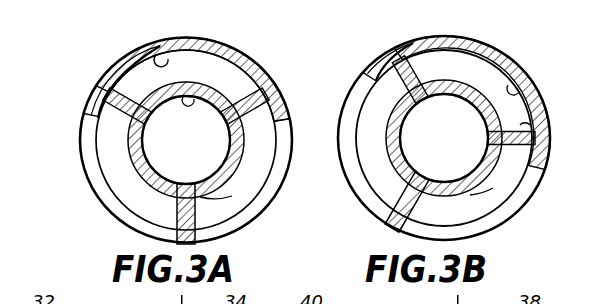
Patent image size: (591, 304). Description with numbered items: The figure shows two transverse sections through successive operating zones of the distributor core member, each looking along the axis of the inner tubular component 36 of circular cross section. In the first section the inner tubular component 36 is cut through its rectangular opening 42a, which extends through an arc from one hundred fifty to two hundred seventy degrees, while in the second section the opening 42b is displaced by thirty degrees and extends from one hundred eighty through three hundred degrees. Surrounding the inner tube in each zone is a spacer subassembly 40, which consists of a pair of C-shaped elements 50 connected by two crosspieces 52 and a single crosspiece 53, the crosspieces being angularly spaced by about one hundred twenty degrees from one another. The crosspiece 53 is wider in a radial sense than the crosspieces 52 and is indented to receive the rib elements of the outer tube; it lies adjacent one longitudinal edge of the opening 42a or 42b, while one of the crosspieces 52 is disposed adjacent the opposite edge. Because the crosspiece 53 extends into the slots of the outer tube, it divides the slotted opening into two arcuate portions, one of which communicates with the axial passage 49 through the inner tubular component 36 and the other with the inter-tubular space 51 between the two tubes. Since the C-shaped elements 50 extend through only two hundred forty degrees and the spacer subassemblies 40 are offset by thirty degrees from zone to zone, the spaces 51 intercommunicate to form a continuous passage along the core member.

In FIG. 3A, the inner tubular component 36 is at (129, 160).
In FIG. 3B, the inner tubular component 36 is at (470, 87).
In FIG. 3A, the spacer subassembly 40 is at (260, 65).
In FIG. 3B, the spacer subassembly 40 is at (390, 231).
In FIG. 3A, the opening 42a is at (226, 147).
In FIG. 3B, the opening 42b is at (444, 138).
In FIG. 3A, the axial passage 49 is at (191, 96).
In FIG. 3A, the C-shaped element 50 is at (233, 197).
In FIG. 3B, the C-shaped element 50 is at (494, 189).
In FIG. 3A, the inter-tubular space 51 is at (166, 53).
In FIG. 3B, the inter-tubular space 51 is at (514, 88).
In FIG. 3A, the crosspiece 52 is at (86, 113).
In FIG. 3B, the crosspiece 52 is at (411, 45).
In FIG. 3A, the crosspiece 53 is at (171, 210).
In FIG. 3B, the crosspiece 53 is at (395, 189).